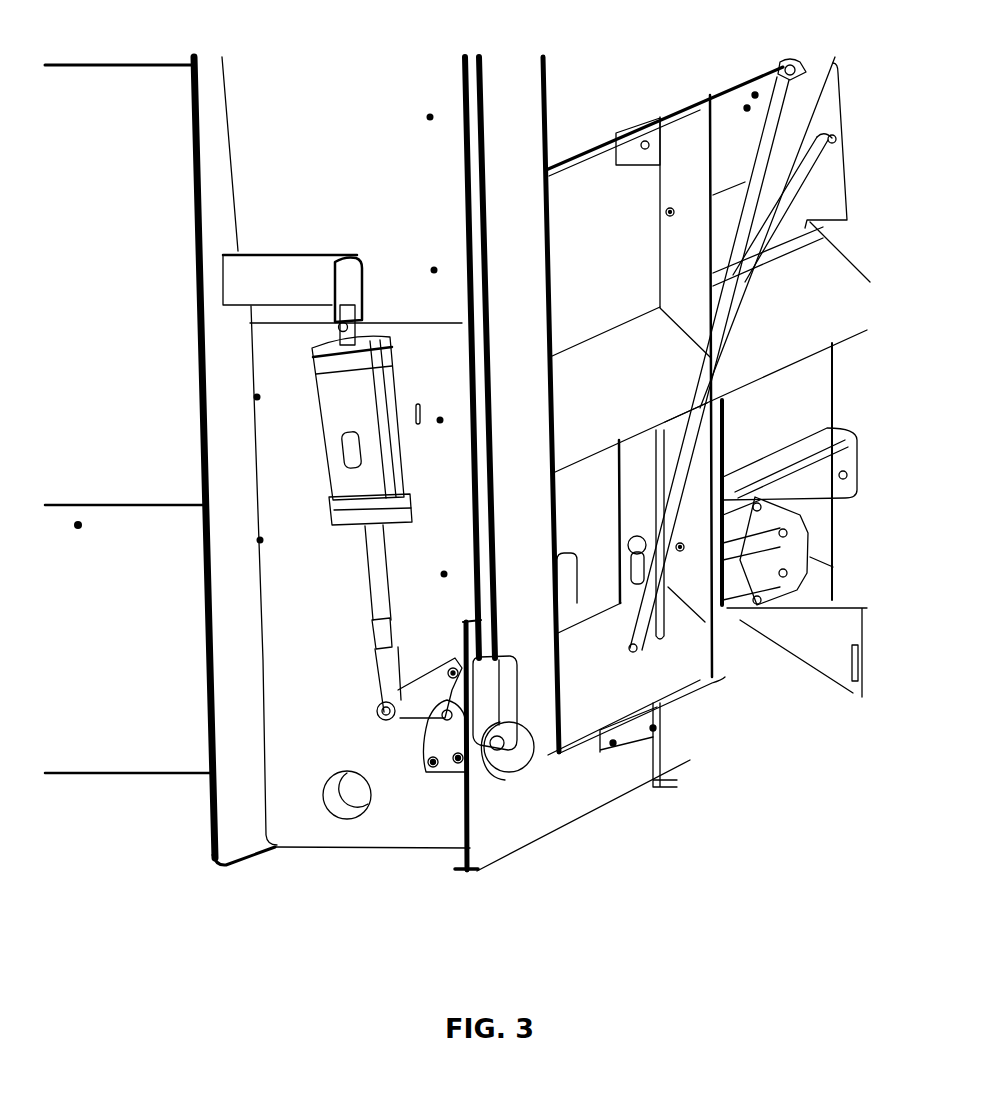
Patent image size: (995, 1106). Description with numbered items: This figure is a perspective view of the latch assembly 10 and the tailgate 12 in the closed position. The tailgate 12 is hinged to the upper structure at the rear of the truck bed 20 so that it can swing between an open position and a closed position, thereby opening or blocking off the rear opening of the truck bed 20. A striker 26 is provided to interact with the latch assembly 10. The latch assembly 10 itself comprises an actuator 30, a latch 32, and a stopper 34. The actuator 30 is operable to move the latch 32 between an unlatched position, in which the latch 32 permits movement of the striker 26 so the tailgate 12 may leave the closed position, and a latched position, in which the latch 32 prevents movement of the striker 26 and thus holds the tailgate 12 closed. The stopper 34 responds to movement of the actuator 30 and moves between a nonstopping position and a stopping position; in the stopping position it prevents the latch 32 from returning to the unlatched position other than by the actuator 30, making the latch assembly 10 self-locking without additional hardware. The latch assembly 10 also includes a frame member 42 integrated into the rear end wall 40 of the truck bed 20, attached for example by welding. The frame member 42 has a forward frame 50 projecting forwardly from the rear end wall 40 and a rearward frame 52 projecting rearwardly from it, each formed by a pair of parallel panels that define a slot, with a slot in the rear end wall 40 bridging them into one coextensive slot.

The latch assembly 10 is at (316, 710).
The tailgate 12 is at (546, 96).
The truck bed 20 is at (121, 66).
The striker 26 is at (490, 748).
The actuator 30 is at (340, 415).
The latch 32 is at (521, 760).
The stopper 34 is at (427, 743).
The rear end wall 40 is at (507, 837).
The frame member 42 is at (515, 704).
The forward frame 50 is at (463, 780).
The rearward frame 52 is at (496, 778).